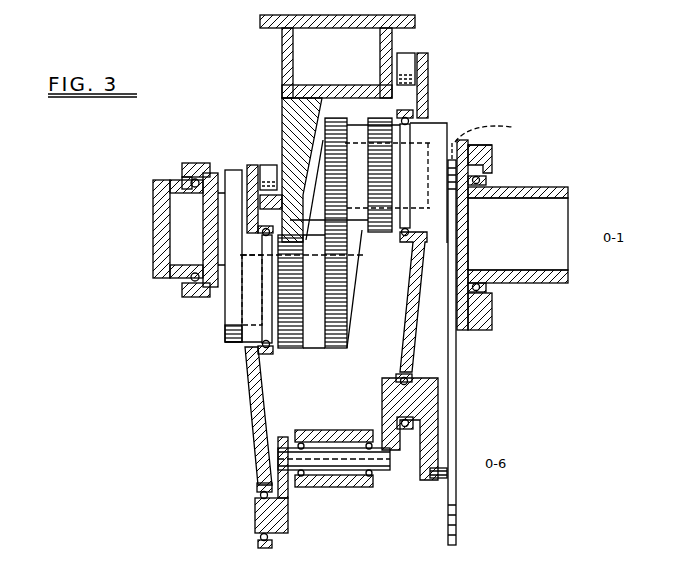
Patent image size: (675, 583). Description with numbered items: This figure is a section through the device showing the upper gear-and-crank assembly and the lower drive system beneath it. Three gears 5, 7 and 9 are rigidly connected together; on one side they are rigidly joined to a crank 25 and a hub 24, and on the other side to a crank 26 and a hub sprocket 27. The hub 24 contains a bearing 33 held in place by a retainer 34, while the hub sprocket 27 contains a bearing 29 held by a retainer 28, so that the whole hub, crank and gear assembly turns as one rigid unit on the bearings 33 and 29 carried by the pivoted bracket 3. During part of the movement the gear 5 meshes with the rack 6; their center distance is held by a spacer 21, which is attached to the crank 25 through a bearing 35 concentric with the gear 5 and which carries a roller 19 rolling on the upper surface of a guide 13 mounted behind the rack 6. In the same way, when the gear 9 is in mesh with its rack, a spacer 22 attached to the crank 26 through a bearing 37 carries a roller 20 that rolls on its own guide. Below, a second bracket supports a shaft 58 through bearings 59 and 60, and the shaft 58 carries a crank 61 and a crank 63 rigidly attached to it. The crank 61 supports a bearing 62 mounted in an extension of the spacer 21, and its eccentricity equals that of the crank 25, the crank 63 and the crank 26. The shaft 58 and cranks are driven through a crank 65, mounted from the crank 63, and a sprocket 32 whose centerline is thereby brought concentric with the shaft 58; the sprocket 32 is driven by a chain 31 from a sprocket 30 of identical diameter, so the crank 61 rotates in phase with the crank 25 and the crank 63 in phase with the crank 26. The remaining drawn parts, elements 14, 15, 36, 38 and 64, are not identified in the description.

The pivoted bracket 3 is at (155, 197).
The gear 5 is at (290, 350).
The rack 6 is at (257, 218).
The gear 7 is at (327, 350).
The gear 9 is at (392, 238).
The guide 13 is at (267, 202).
The housing 14 is at (282, 105).
The top plate 15 is at (416, 22).
The roller 19 is at (270, 165).
The roller 20 is at (412, 50).
The spacer 21 is at (255, 445).
The spacer 22 is at (428, 93).
The hub 24 is at (200, 163).
The crank 25 is at (225, 312).
The crank 26 is at (443, 125).
The hub sprocket 27 is at (493, 157).
The retainer 28 is at (490, 175).
The bearing 29 is at (487, 292).
The sprocket 30 is at (512, 127).
The chain 31 is at (456, 372).
The sprocket 32 is at (408, 333).
The bearing 33 is at (191, 181).
The retainer 34 is at (190, 178).
The bearing 35 is at (230, 340).
The shaft 36 is at (270, 350).
The bearing 37 is at (395, 245).
The bearing 38 is at (400, 116).
The shaft 58 is at (391, 470).
The bearing 59 is at (298, 441).
The bearing 60 is at (363, 483).
The crank 61 is at (290, 520).
The bearing 62 is at (258, 537).
The crank 63 is at (385, 402).
The bearing 64 is at (397, 382).
The crank 65 is at (437, 480).